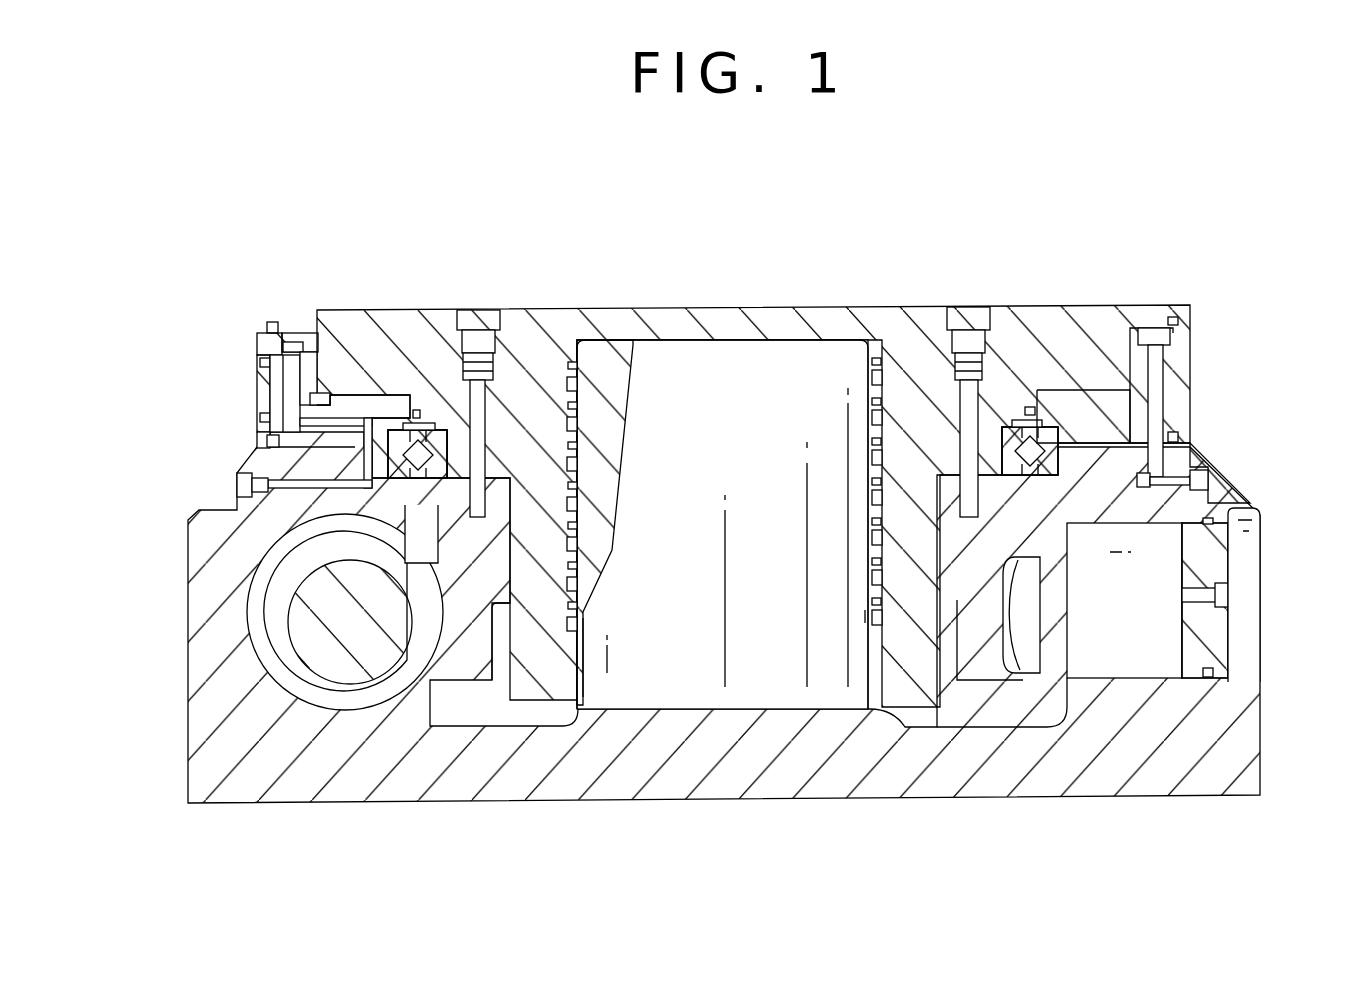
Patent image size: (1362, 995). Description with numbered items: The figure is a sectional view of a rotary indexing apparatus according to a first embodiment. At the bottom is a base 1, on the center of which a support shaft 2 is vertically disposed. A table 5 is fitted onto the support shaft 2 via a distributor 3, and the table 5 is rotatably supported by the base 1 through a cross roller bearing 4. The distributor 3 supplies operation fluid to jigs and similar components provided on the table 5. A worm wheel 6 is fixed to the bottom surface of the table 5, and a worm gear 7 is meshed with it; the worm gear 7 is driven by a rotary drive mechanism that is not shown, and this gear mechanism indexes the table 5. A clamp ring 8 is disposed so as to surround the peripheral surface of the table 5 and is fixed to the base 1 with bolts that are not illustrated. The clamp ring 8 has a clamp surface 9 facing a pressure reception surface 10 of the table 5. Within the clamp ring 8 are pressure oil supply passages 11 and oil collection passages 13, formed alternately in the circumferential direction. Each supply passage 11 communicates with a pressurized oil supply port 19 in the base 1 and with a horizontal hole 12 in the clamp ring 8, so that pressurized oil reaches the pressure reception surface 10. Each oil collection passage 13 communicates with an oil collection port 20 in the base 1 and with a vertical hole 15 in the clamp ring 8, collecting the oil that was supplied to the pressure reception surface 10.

The base 1 is at (812, 790).
The support shaft 2 is at (807, 355).
The distributor 3 is at (885, 375).
The cross roller bearing 4 is at (437, 420).
The table 5 is at (1033, 320).
The worm wheel 6 is at (465, 667).
The worm gear 7 is at (360, 705).
The clamp ring 8 is at (270, 388).
The clamp surface 9 is at (305, 348).
The pressure reception surface 10 is at (330, 358).
The pressure oil supply passages 11 is at (260, 398).
The horizontal hole 12 is at (357, 372).
The oil collection passages 13 is at (1155, 400).
The vertical hole 15 is at (1150, 425).
The pressurized oil supply port 19 is at (223, 495).
The oil collection port 20 is at (1227, 490).